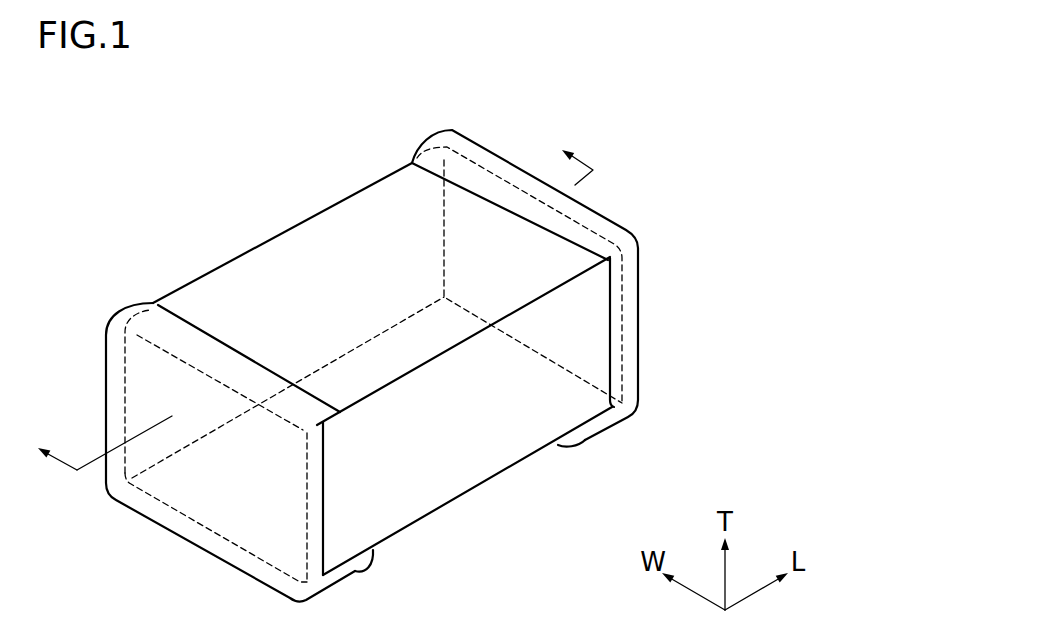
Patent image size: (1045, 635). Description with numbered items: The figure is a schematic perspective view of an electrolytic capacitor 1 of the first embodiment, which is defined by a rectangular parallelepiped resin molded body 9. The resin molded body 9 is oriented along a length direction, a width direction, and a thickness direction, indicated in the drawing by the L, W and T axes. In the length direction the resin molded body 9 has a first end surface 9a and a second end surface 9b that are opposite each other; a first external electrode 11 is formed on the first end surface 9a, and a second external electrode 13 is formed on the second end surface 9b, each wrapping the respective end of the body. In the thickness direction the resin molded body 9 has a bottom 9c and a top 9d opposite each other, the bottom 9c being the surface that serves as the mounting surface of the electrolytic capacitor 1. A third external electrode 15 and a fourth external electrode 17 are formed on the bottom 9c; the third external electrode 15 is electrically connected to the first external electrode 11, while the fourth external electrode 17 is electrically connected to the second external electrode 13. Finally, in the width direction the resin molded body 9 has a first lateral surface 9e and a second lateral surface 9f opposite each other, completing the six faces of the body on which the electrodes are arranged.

The electrolytic capacitor 1 is at (91, 164).
The resin molded body 9 is at (405, 194).
The first end surface 9a is at (215, 496).
The second end surface 9b is at (580, 304).
The bottom 9c is at (418, 498).
The top 9d is at (302, 197).
The first lateral surface 9e is at (495, 452).
The second lateral surface 9f is at (252, 295).
The first external electrode 11 is at (113, 362).
The second external electrode 13 is at (602, 225).
The third external electrode 15 is at (358, 568).
The fourth external electrode 17 is at (578, 435).